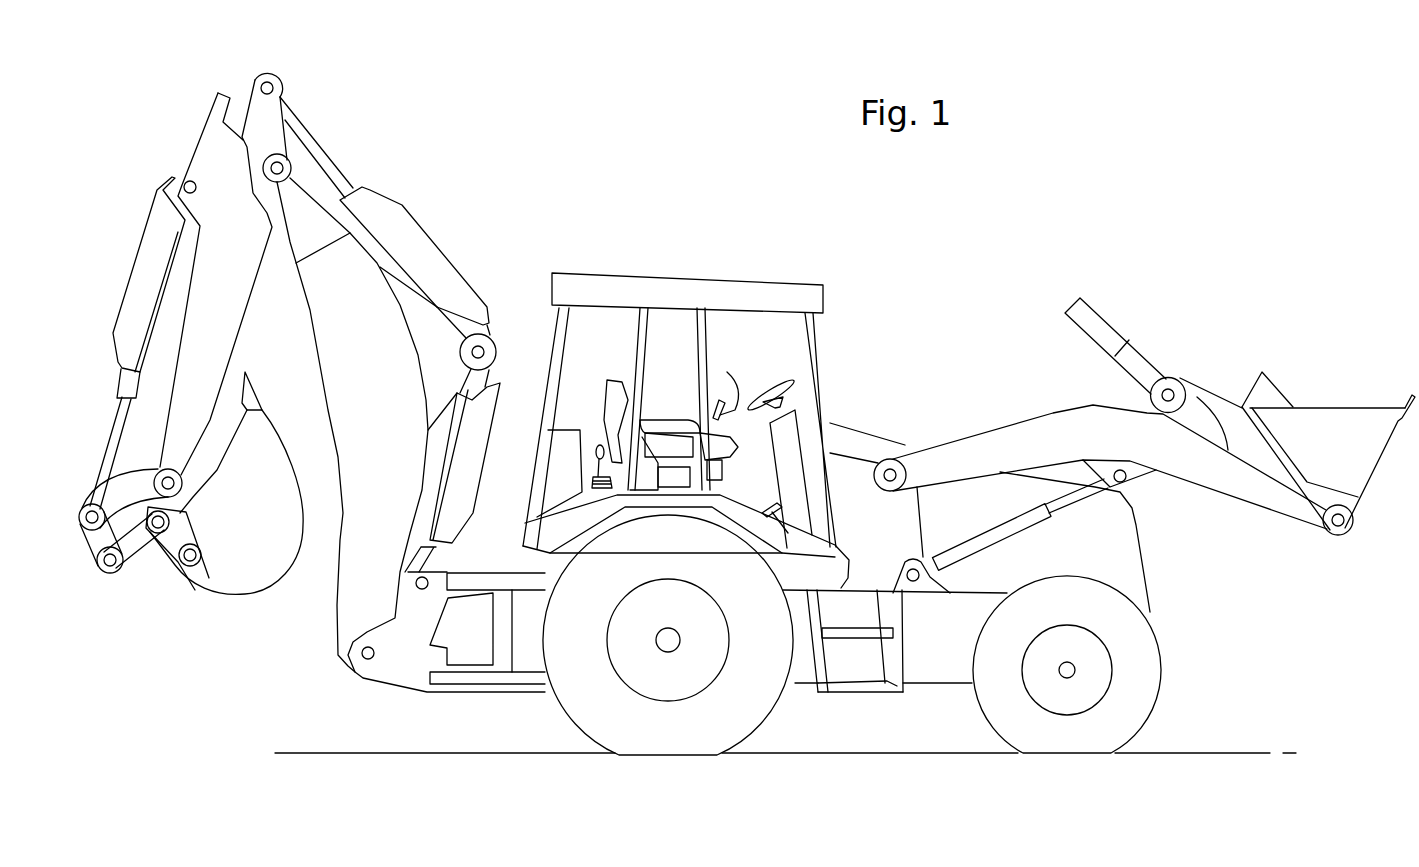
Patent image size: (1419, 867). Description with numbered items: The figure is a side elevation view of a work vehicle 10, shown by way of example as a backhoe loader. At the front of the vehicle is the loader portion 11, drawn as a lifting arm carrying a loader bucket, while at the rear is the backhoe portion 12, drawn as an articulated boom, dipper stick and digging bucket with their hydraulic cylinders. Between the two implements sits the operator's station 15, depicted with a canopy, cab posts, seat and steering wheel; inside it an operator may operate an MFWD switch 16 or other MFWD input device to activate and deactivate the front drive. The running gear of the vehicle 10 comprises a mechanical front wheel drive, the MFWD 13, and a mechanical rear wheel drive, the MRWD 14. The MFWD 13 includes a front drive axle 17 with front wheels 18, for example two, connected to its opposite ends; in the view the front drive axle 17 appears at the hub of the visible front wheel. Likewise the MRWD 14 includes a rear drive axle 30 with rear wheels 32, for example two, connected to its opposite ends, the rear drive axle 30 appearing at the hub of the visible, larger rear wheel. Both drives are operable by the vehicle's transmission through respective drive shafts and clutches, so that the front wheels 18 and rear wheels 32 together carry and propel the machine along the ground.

The work vehicle 10 is at (992, 220).
The loader portion 11 is at (1023, 427).
The backhoe portion 12 is at (207, 158).
The MFWD 13 is at (1123, 664).
The MRWD 14 is at (655, 658).
The operator's station 15 is at (741, 283).
The MFWD switch 16 is at (726, 408).
The front drive axle 17 is at (1106, 653).
The front wheels 18 is at (1147, 678).
The rear drive axle 30 is at (673, 638).
The rear wheels 32 is at (572, 702).